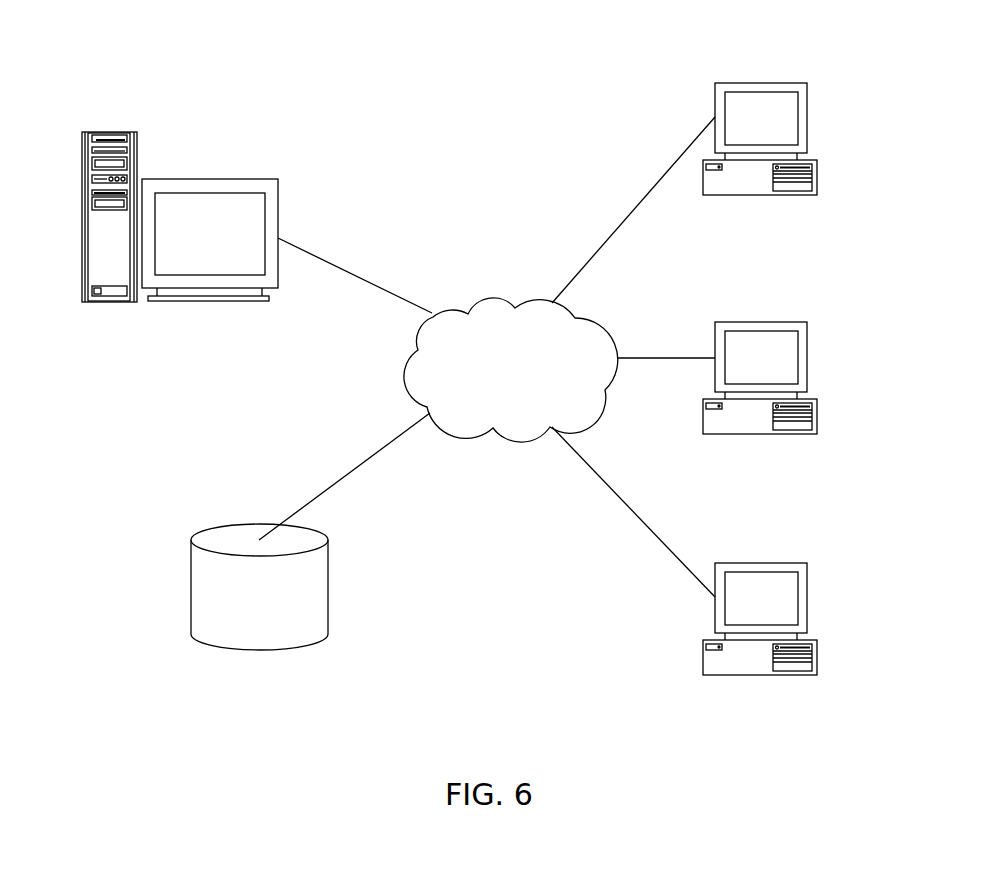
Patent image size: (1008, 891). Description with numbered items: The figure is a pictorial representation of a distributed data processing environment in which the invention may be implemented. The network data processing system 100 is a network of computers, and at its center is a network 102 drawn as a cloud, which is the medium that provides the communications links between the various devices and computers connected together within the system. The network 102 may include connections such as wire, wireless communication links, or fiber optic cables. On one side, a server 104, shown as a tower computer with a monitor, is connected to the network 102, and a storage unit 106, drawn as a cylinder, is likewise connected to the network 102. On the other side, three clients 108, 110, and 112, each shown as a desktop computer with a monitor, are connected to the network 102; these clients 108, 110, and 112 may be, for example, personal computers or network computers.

The network data processing system 100 is at (438, 75).
The network 102 is at (525, 300).
The server 104 is at (113, 132).
The storage unit 106 is at (191, 587).
The client 108 is at (807, 120).
The client 110 is at (807, 358).
The client 112 is at (807, 596).